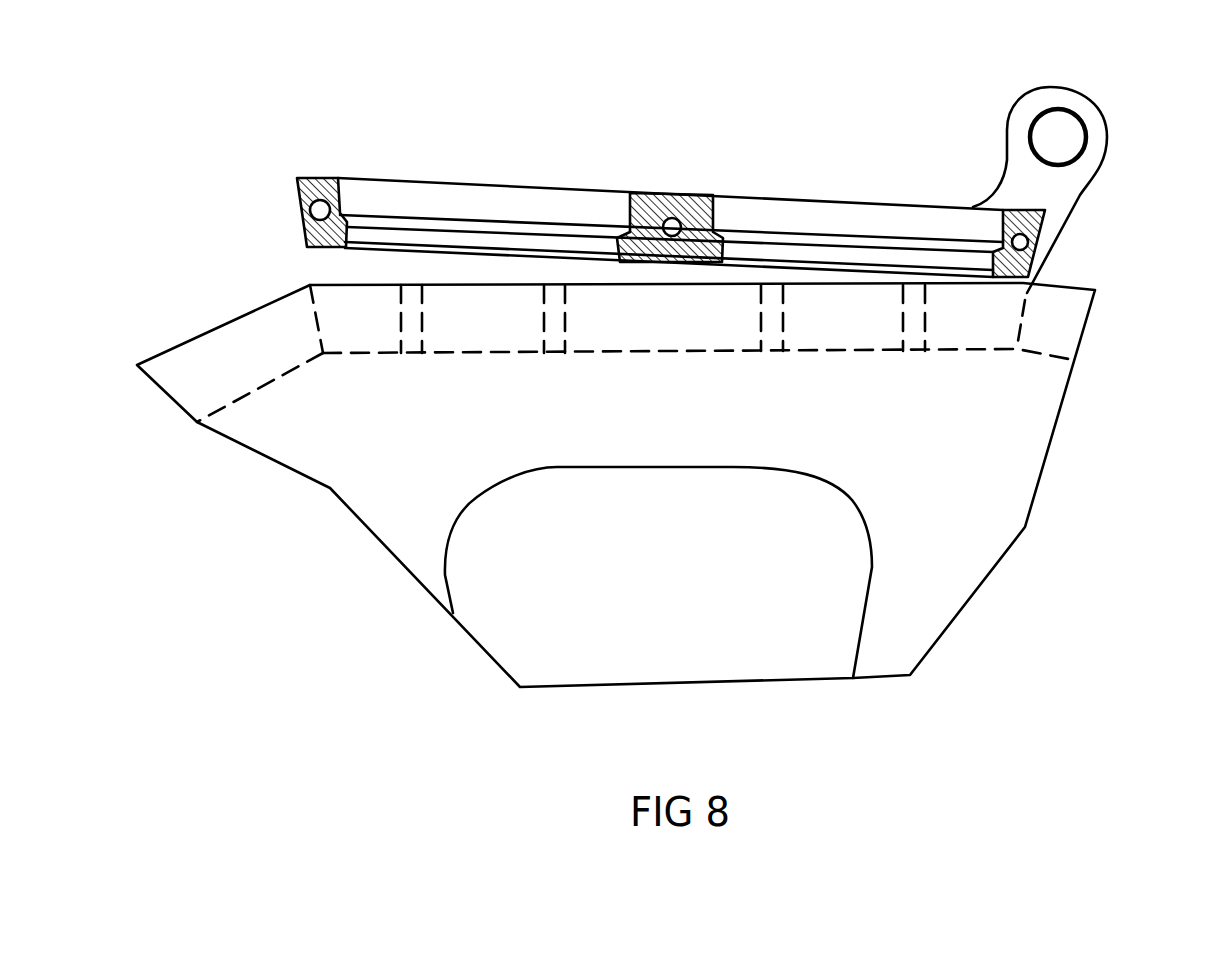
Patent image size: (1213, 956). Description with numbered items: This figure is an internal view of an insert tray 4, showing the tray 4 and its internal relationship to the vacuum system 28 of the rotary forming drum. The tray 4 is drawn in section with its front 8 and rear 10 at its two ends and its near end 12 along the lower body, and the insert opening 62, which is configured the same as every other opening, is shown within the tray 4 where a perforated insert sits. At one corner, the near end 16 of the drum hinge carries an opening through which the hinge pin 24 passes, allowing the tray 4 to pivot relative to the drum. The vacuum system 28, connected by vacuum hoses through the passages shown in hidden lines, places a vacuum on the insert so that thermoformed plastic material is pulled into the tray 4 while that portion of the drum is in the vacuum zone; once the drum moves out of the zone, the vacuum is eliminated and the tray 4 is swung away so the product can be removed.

The insert tray 4 is at (313, 178).
The front 8 is at (300, 205).
The insert opening 62 is at (473, 202).
The near end of drum hinge 16 is at (1025, 110).
The hinge pin 24 is at (1063, 137).
The rear 10 is at (1043, 243).
The near end 12 is at (1030, 268).
The vacuum system 28 is at (555, 345).